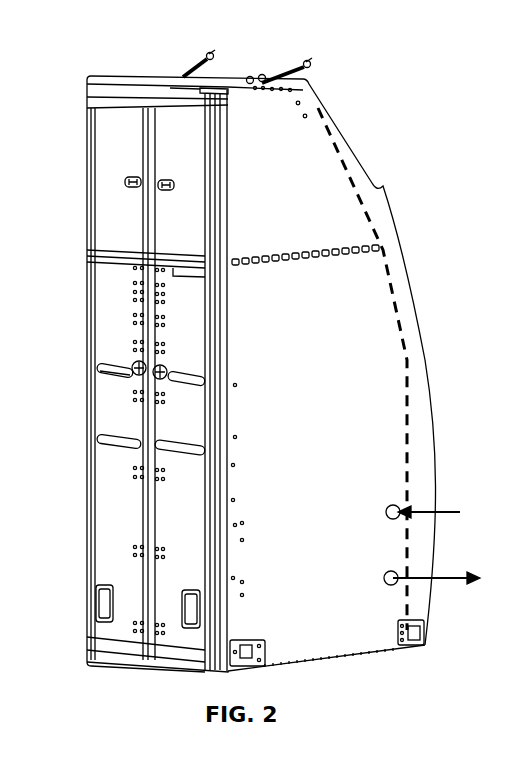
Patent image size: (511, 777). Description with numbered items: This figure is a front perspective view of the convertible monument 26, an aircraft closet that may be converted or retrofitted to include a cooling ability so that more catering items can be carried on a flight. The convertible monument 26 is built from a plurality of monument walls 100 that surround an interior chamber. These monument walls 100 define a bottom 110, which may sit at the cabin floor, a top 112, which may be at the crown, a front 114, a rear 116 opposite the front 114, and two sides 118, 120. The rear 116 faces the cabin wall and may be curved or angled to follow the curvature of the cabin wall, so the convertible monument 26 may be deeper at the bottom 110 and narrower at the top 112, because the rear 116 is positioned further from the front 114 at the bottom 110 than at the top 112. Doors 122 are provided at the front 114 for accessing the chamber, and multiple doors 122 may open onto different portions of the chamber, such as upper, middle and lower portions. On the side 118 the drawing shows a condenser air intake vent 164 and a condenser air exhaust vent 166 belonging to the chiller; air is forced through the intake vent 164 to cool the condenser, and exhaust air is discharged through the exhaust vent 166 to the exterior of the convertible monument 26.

The convertible monument 26 is at (368, 67).
The monument walls 100 is at (180, 75).
The bottom 110 is at (325, 659).
The top 112 is at (126, 74).
The front 114 is at (108, 514).
The rear 116 is at (410, 282).
The side 118 is at (362, 402).
The side 120 is at (87, 312).
The doors 122 is at (108, 569).
The condenser air intake vent 164 is at (390, 505).
The condenser air exhaust vent 166 is at (394, 585).